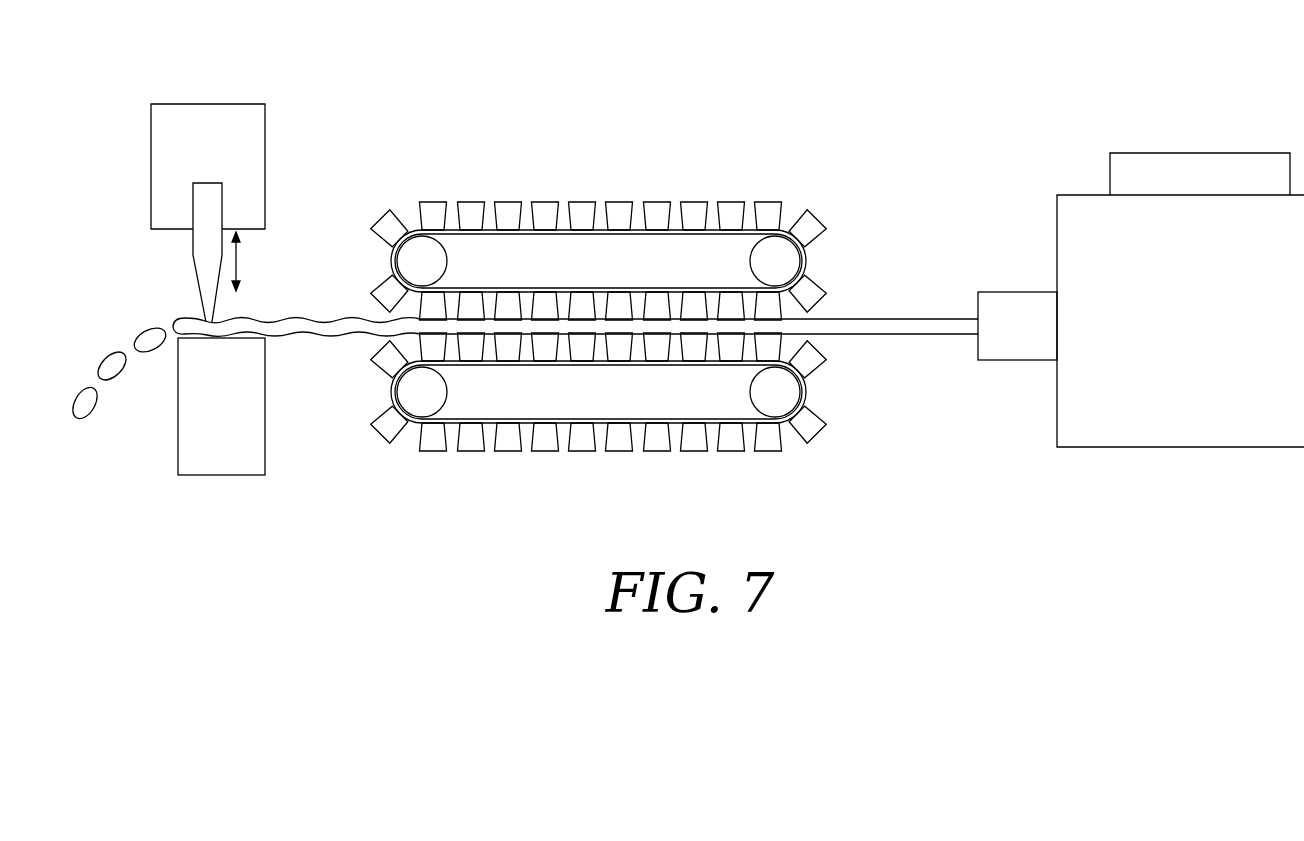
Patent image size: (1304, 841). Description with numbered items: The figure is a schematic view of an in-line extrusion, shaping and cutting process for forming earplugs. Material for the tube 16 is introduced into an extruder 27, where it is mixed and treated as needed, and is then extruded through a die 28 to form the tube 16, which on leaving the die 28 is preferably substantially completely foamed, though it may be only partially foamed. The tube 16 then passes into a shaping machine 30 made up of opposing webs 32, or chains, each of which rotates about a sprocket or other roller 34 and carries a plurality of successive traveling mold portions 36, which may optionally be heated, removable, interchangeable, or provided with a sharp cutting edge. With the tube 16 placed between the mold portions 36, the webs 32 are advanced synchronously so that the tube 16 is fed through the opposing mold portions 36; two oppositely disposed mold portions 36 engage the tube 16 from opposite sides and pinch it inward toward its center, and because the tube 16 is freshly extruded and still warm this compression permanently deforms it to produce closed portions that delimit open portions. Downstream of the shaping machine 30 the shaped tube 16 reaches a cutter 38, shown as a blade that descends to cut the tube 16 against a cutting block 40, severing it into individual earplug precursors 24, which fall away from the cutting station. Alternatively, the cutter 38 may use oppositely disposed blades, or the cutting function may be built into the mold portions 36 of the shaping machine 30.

The tube 16 is at (306, 337).
The earplug precursor 24 is at (108, 357).
The extruder 27 is at (1182, 420).
The die 28 is at (1005, 347).
The shaping machine 30 is at (627, 331).
The webs 32 is at (541, 236).
The roller 34 is at (420, 255).
The mold portions 36 is at (823, 281).
The cutter 38 is at (207, 120).
The cutting block 40 is at (197, 443).